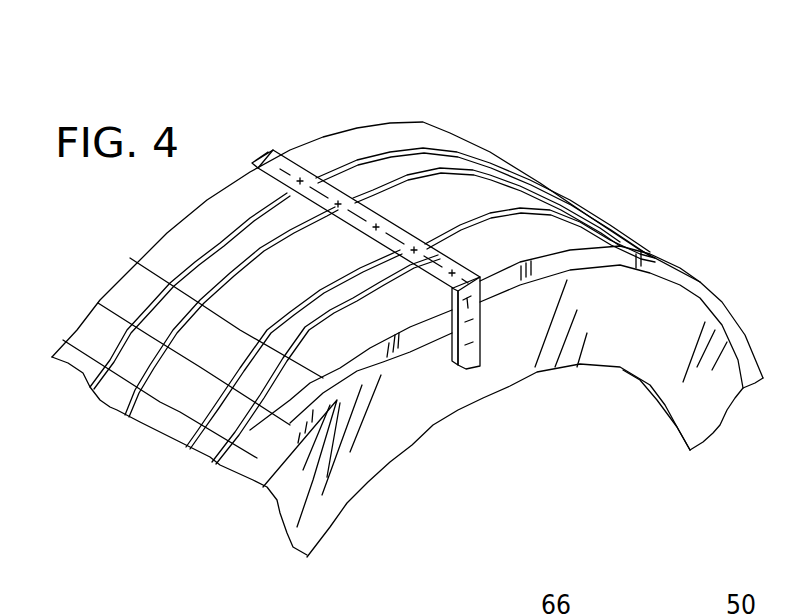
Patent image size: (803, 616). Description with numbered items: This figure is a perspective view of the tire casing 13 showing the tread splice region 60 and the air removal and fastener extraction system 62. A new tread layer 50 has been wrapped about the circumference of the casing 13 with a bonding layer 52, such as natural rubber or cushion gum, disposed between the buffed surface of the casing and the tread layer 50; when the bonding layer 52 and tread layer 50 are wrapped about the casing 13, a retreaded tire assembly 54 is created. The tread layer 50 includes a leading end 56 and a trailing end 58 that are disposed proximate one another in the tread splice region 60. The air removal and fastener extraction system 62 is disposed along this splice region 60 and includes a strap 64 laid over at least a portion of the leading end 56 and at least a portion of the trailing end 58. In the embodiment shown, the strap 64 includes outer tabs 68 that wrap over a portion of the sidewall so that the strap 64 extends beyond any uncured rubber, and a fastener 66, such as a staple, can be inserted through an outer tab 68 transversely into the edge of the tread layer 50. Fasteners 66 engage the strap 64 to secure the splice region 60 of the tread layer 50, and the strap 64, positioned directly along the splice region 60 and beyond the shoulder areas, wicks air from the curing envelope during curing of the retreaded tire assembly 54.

The casing 13 is at (387, 437).
The tread layer 50 is at (253, 437).
The bonding layer 52 is at (337, 400).
The retreaded tire assembly 54 is at (656, 221).
The leading end 56 is at (417, 330).
The trailing end 58 is at (558, 263).
The tread splice region 60 is at (246, 140).
The air removal and fastener extraction system 62 is at (492, 250).
The strap 64 is at (333, 192).
The fastener 66 is at (357, 217).
The outer tab 68 is at (477, 358).